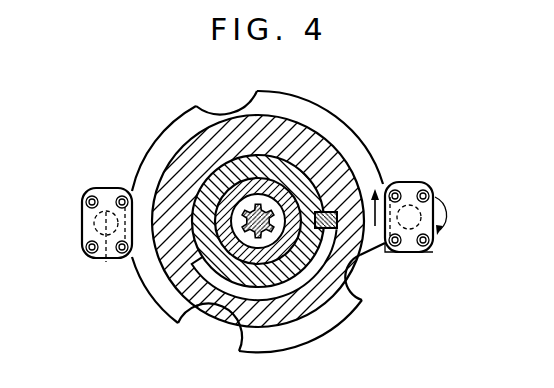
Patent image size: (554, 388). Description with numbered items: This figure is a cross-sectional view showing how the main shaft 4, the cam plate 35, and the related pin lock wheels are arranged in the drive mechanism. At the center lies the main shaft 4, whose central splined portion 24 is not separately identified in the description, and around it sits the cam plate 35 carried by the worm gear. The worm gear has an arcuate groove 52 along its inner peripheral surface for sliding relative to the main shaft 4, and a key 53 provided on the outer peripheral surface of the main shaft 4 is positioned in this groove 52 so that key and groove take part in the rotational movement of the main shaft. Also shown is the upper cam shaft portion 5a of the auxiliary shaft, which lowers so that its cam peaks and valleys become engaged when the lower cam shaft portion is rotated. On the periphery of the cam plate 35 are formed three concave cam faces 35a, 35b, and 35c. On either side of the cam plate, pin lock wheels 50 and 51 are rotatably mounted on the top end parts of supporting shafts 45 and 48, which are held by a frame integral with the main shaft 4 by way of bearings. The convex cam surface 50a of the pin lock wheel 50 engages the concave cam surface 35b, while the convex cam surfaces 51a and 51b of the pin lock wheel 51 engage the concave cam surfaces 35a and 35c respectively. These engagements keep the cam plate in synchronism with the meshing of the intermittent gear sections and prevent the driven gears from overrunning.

The main shaft 4 is at (212, 173).
The splined shaft 24 is at (263, 204).
The upper cam shaft portion 5a is at (303, 197).
The cam plate 35 is at (341, 142).
The concave cam surface 35a is at (362, 300).
The concave cam surface 35b is at (202, 113).
The concave cam surface 35c is at (232, 338).
The arcuate groove 52 is at (300, 282).
The key 53 is at (334, 213).
The supporting shaft 48 is at (415, 215).
The pin lock wheel 50 is at (82, 225).
The convex cam surface 50a is at (107, 188).
The supporting shaft 45 is at (105, 259).
The pin lock wheel 51 is at (434, 238).
The convex cam surface 51a is at (411, 254).
The convex cam surface 51b is at (426, 192).